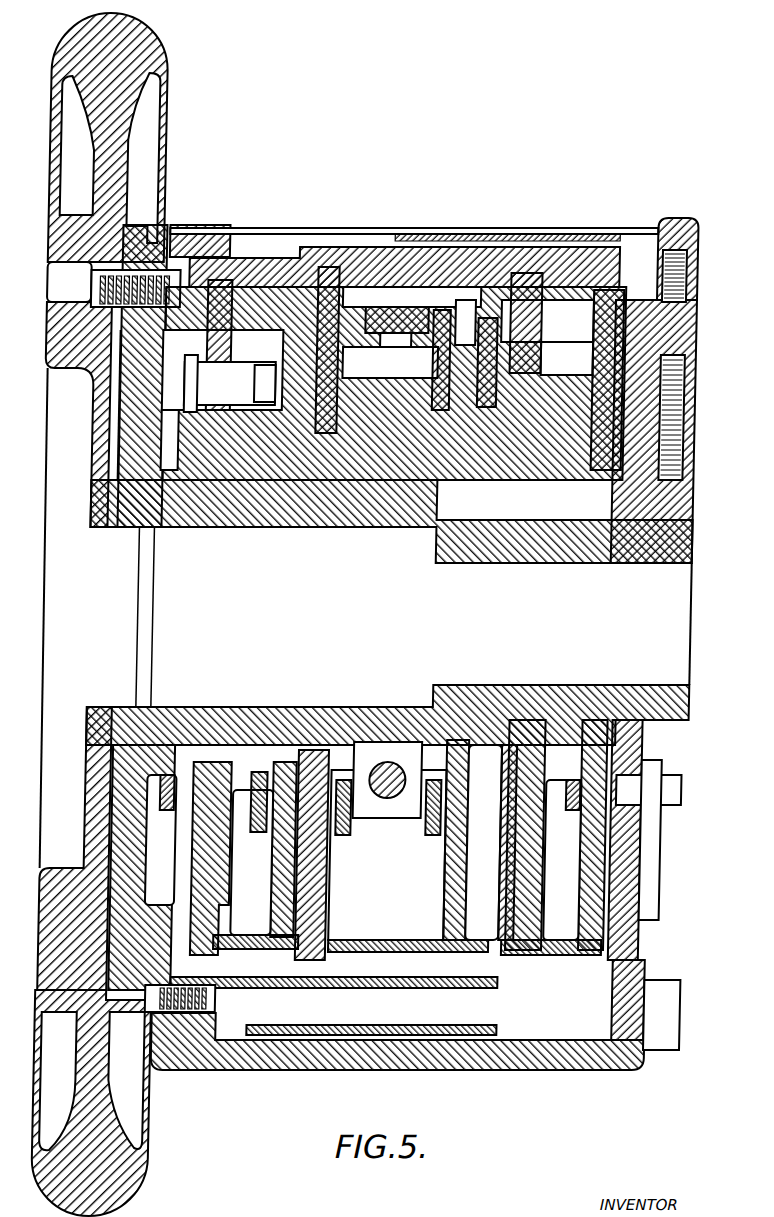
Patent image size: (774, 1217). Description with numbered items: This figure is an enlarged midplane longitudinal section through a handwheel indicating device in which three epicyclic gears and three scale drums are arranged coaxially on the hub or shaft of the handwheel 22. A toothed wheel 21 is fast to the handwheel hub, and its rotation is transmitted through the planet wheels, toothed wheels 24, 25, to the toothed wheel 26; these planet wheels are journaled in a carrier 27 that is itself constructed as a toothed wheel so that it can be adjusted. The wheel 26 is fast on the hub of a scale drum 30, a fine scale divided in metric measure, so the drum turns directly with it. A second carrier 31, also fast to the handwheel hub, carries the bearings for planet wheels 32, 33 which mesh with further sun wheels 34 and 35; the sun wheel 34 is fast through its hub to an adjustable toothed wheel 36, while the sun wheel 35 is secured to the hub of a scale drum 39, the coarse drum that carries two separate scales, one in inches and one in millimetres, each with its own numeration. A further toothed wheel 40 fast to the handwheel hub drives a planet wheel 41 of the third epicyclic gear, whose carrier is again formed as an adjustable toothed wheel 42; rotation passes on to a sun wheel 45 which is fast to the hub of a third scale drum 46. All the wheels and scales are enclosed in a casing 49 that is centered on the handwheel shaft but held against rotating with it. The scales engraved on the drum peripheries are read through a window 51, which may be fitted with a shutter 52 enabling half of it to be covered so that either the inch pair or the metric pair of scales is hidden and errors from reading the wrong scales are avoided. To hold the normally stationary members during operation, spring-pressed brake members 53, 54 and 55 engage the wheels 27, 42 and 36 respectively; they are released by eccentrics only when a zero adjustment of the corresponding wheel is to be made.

The toothed wheel 21 is at (181, 810).
The handwheel 22 is at (64, 208).
The toothed wheel 24 is at (142, 333).
The toothed wheel 25 is at (258, 364).
The toothed wheel 26 is at (272, 822).
The carrier 27 is at (236, 895).
The scale drum 30 is at (297, 948).
The carrier 31 is at (388, 478).
The planet wheel 32 is at (361, 305).
The planet wheel 33 is at (449, 318).
The sun wheel 34 is at (362, 830).
The sun wheel 35 is at (449, 833).
The toothed wheel 36 is at (330, 910).
The scale drum 39 is at (407, 945).
The toothed wheel 40 is at (492, 752).
The planet wheel 41 is at (494, 318).
The toothed wheel 42 is at (548, 900).
The sun wheel 45 is at (586, 812).
The scale drum 46 is at (550, 960).
The casing 49 is at (638, 1062).
The window 51 is at (398, 262).
The shutter 52 is at (533, 232).
The brake member 53 is at (240, 982).
The brake member 54 is at (519, 968).
The brake member 55 is at (348, 980).